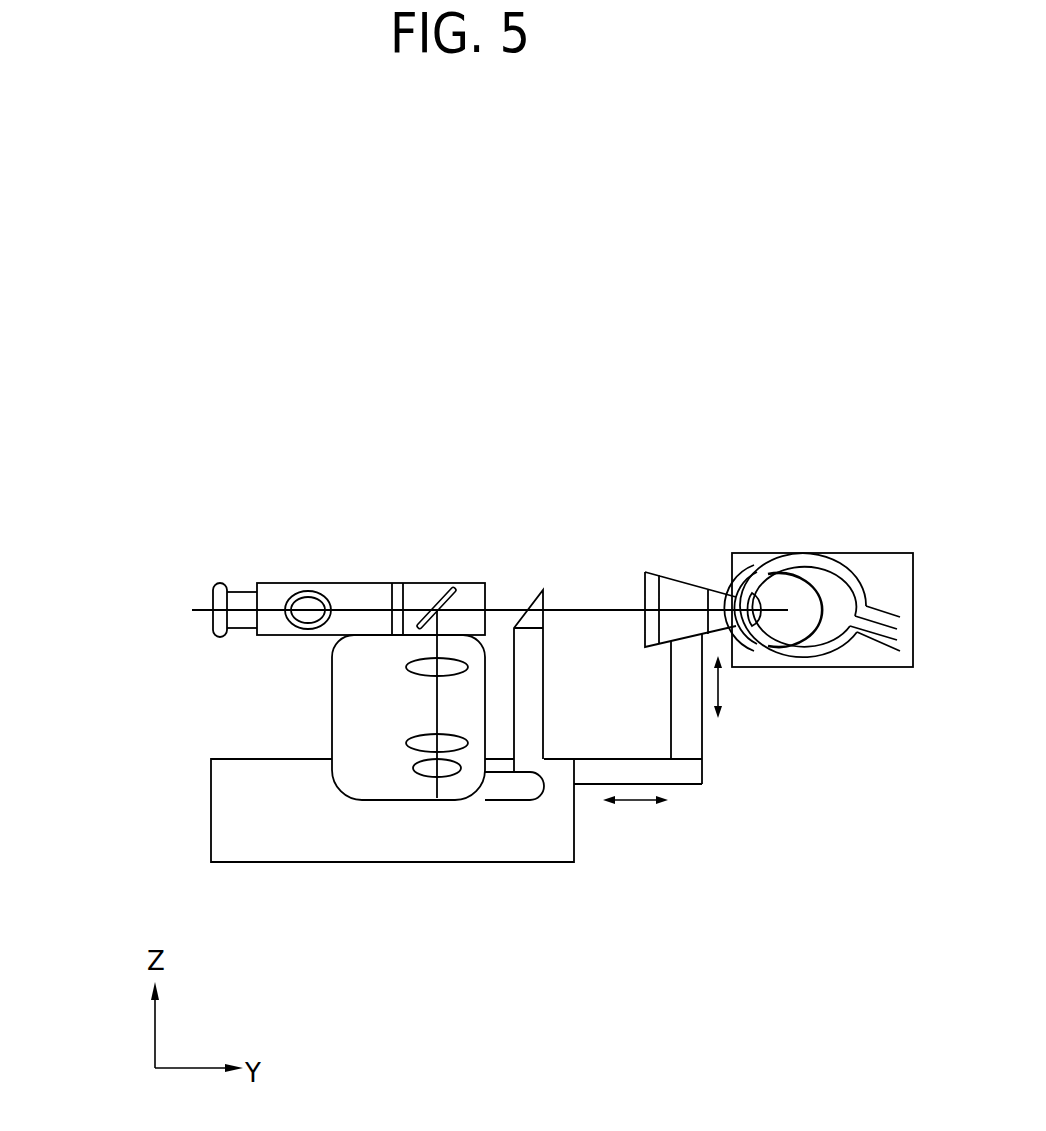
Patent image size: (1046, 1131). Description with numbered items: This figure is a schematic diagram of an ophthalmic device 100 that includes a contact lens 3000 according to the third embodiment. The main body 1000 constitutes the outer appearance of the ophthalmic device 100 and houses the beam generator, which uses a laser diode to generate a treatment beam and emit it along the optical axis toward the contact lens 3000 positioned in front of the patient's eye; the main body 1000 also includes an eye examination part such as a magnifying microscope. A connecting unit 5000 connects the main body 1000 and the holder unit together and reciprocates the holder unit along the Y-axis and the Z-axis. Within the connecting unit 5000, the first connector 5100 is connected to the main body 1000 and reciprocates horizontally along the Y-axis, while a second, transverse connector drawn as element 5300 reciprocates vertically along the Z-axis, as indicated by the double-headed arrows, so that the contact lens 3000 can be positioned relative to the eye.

The ophthalmic device 100 is at (502, 536).
The main body 1000 is at (211, 812).
The contact lens 3000 is at (696, 586).
The connecting unit 5000 is at (833, 720).
The first connector 5100 is at (687, 772).
The vertical driving stage 5300 is at (687, 743).